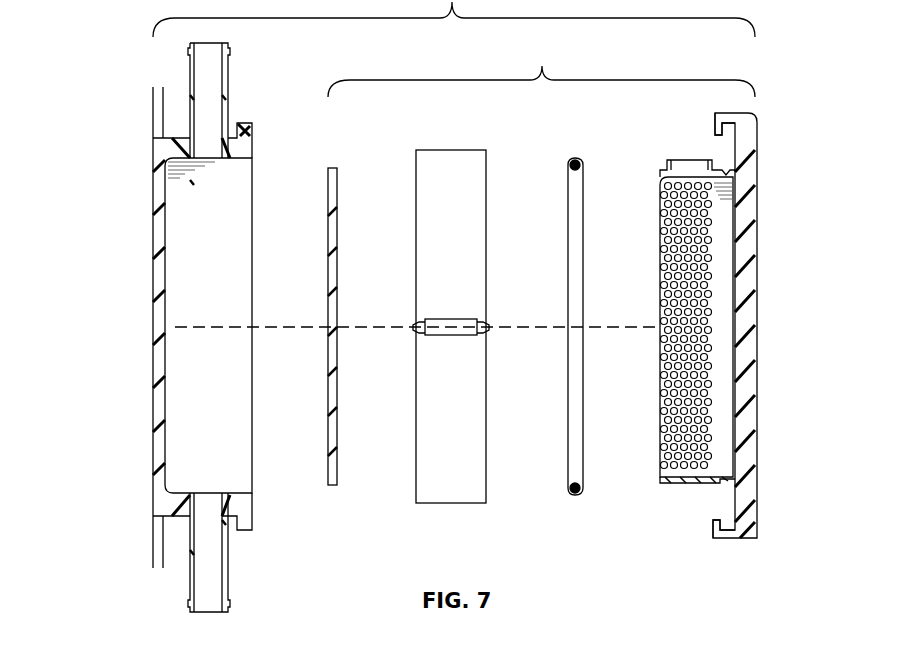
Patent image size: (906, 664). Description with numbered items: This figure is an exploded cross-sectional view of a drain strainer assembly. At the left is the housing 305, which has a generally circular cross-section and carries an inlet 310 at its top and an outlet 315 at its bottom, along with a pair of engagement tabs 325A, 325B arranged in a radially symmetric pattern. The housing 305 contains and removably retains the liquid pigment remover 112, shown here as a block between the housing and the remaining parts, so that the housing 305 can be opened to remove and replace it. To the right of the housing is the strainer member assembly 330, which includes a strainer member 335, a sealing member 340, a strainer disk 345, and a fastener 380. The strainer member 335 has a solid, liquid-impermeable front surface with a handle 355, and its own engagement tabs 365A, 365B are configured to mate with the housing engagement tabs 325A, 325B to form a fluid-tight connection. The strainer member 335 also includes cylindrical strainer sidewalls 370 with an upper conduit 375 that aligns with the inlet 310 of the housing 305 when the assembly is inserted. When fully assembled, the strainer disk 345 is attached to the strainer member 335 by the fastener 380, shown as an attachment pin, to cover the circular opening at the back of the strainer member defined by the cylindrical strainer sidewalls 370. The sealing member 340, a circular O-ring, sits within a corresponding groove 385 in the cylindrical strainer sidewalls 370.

The liquid pigment remover 112 is at (452, 150).
The housing 305 is at (155, 300).
The inlet 310 is at (200, 73).
The outlet 315 is at (200, 575).
The engagement tab 325A is at (250, 133).
The engagement tab 325B is at (240, 530).
The strainer member assembly 330 is at (541, 68).
The strainer member 335 is at (624, 117).
The sealing member 340 is at (570, 450).
The strainer disk 345 is at (338, 195).
The handle 355 is at (747, 285).
The engagement tab 365A is at (716, 126).
The engagement tab 365B is at (713, 530).
The cylindrical strainer sidewalls 370 is at (668, 483).
The upper conduit 375 is at (690, 165).
The fastener 380 is at (452, 320).
The groove 385 is at (723, 485).